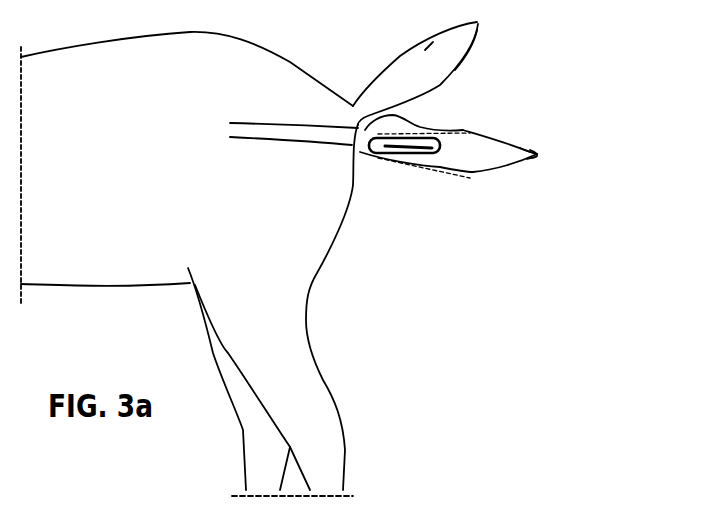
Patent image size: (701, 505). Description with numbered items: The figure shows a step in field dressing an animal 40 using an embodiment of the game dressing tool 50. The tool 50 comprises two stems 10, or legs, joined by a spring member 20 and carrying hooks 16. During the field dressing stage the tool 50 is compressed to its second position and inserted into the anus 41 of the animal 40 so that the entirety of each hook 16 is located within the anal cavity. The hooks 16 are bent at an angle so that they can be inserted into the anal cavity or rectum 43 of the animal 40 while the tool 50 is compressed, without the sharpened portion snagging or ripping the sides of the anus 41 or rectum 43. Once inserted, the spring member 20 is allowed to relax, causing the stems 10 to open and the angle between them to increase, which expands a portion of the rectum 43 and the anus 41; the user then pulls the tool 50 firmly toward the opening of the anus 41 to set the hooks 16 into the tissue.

The stems 10 is at (499, 137).
The hooks 16 is at (470, 173).
The spring member 20 is at (543, 146).
The animal 40 is at (317, 285).
The anus 41 is at (419, 144).
The rectum 43 is at (328, 127).
The game dressing tool 50 is at (553, 153).